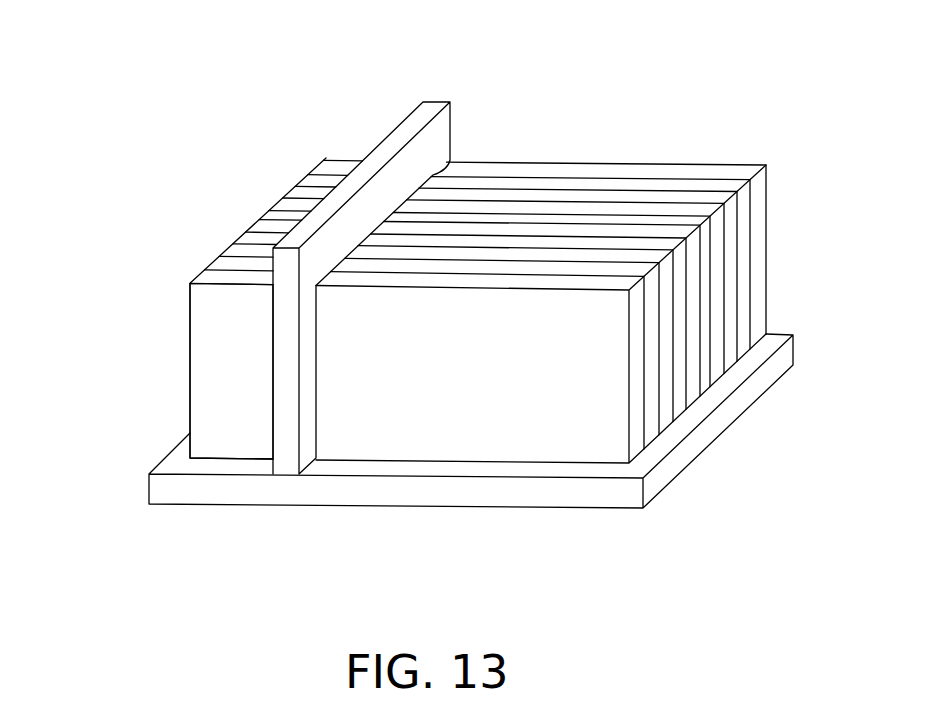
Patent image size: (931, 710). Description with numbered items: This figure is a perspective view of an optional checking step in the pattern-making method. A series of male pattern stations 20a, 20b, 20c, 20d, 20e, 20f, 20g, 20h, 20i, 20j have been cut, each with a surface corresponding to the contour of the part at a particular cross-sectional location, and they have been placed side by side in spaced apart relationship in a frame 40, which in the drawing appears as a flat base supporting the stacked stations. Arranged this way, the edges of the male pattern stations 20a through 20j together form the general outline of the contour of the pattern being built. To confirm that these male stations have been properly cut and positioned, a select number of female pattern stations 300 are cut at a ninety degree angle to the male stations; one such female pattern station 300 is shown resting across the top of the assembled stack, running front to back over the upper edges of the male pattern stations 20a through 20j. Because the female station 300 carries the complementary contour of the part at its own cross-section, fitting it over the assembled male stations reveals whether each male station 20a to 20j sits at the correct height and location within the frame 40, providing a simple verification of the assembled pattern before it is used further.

The female pattern station 300 is at (437, 103).
The frame 40 is at (487, 492).
The pattern station 20a is at (212, 358).
The pattern station 20b is at (207, 263).
The pattern station 20c is at (248, 243).
The pattern station 20d is at (268, 230).
The pattern station 20e is at (270, 223).
The pattern station 20f is at (280, 208).
The pattern station 20g is at (284, 216).
The pattern station 20h is at (281, 196).
The pattern station 20i is at (311, 178).
The pattern station 20j is at (318, 160).